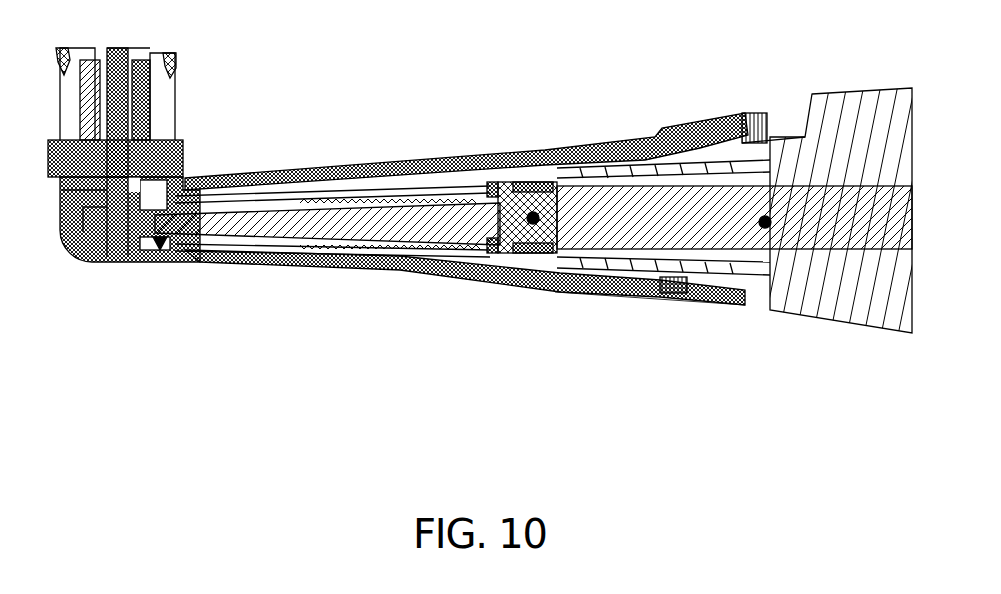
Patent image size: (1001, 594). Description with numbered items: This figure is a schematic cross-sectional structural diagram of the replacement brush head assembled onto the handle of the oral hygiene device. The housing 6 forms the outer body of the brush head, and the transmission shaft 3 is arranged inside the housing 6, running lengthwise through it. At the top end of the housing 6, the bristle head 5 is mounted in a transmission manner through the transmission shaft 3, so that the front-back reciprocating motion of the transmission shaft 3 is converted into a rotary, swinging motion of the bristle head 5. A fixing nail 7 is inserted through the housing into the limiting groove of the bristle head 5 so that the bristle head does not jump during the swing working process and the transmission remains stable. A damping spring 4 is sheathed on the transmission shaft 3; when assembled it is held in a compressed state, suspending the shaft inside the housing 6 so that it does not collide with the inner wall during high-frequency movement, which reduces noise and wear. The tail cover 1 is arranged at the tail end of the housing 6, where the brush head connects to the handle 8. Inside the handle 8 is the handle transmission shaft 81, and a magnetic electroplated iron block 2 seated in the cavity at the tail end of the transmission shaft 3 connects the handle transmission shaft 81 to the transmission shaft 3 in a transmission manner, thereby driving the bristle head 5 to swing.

The tail cover 1 is at (770, 110).
The magnetic electroplated iron block 2 is at (639, 292).
The transmission shaft 3 is at (462, 171).
The damping spring 4 is at (360, 278).
The bristle head 5 is at (158, 112).
The housing 6 is at (465, 292).
The fixing nail 7 is at (128, 257).
The handle 8 is at (847, 185).
The handle transmission shaft 81 is at (734, 281).